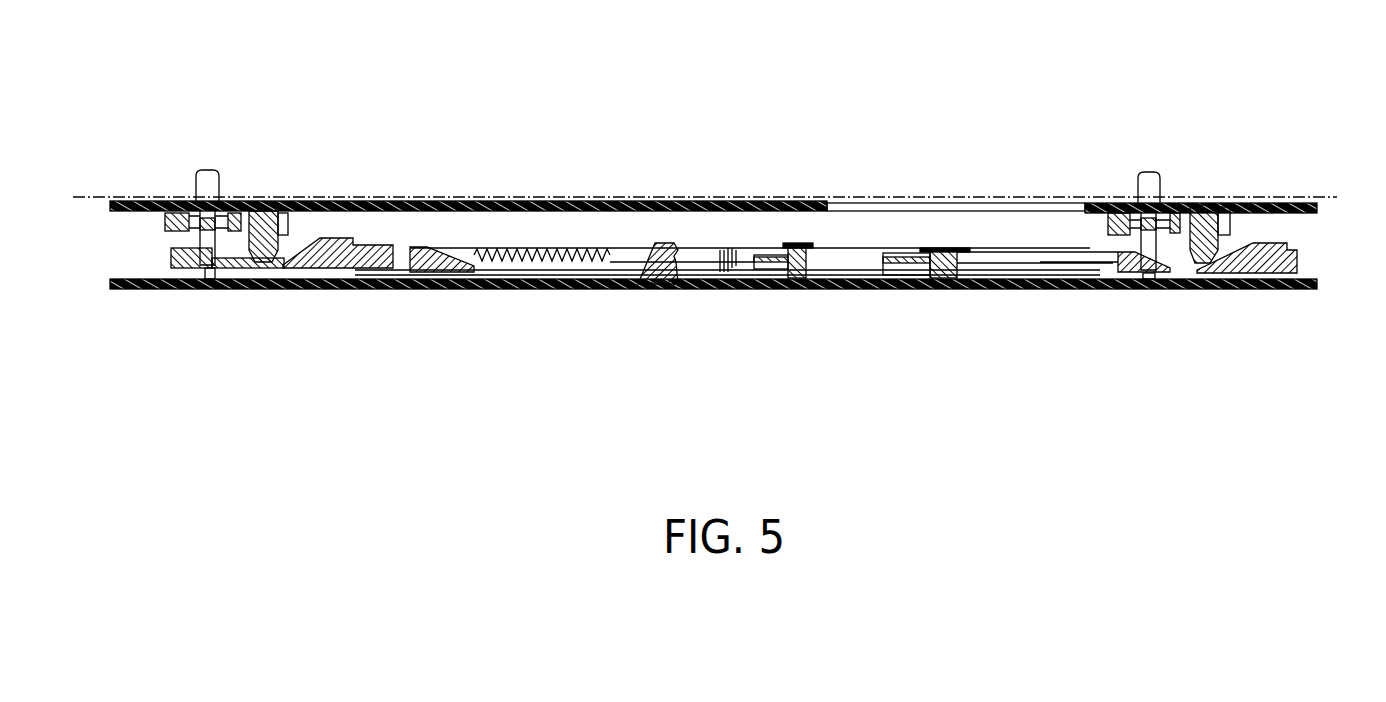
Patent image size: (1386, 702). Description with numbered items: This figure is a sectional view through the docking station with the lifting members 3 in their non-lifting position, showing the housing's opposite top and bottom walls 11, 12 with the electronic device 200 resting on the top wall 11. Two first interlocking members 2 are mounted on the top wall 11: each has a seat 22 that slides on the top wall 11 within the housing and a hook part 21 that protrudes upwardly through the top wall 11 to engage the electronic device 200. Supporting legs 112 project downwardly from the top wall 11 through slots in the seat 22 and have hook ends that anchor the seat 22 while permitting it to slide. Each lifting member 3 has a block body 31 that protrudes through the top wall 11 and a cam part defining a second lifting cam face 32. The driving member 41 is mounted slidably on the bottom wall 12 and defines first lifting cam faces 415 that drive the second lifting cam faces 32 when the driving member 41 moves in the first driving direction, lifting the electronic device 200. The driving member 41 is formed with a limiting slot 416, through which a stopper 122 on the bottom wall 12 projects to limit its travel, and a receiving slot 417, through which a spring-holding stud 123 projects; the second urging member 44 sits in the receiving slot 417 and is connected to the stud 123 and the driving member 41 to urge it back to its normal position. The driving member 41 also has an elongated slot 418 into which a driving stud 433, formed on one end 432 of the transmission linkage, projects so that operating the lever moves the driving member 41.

The electronic device 200 is at (1337, 196).
The top wall 11 is at (1305, 201).
The bottom wall 12 is at (1307, 287).
The supporting legs 112 is at (195, 233).
The stopper 122 is at (810, 270).
The spring-holding stud 123 is at (680, 272).
The first interlocking member 2 is at (178, 183).
The hook part 21 is at (206, 185).
The seat 22 is at (165, 222).
The lifting member 3 is at (272, 268).
The block body 31 is at (262, 211).
The second lifting cam face 32 is at (258, 268).
The driving member 41 is at (1303, 263).
The first lifting cam face 415 is at (313, 238).
The limiting slot 416 is at (845, 260).
The receiving slot 417 is at (603, 262).
The elongated slot 418 is at (1000, 252).
The one end of transmission linkage 432 is at (938, 250).
The driving stud 433 is at (940, 278).
The second urging member 44 is at (545, 262).